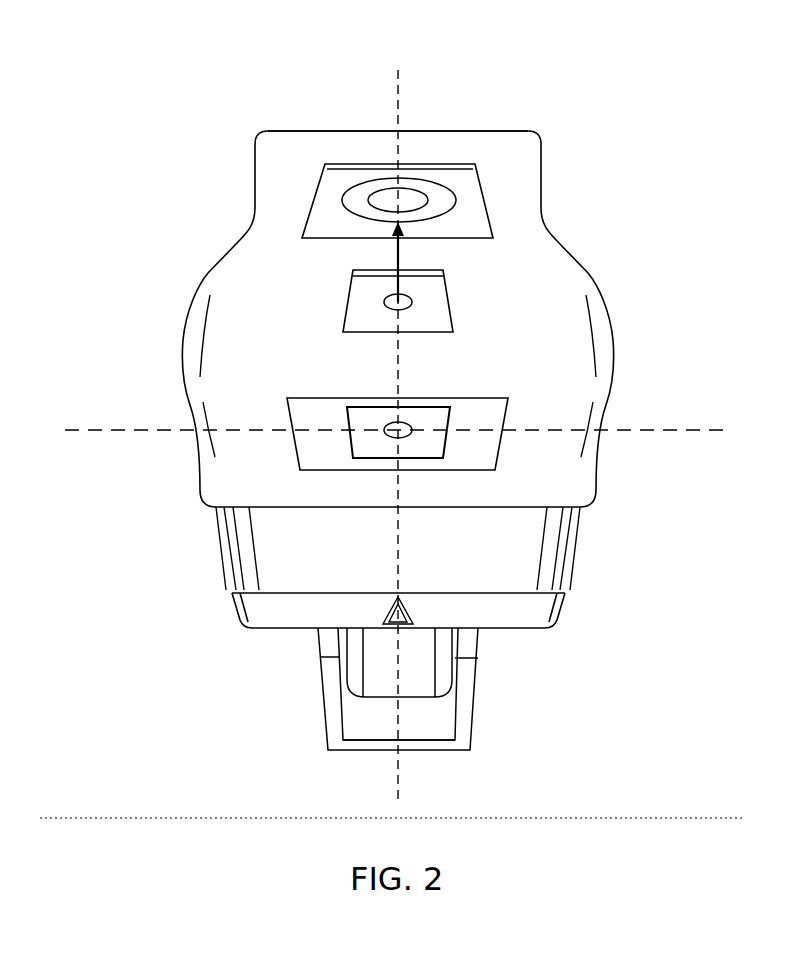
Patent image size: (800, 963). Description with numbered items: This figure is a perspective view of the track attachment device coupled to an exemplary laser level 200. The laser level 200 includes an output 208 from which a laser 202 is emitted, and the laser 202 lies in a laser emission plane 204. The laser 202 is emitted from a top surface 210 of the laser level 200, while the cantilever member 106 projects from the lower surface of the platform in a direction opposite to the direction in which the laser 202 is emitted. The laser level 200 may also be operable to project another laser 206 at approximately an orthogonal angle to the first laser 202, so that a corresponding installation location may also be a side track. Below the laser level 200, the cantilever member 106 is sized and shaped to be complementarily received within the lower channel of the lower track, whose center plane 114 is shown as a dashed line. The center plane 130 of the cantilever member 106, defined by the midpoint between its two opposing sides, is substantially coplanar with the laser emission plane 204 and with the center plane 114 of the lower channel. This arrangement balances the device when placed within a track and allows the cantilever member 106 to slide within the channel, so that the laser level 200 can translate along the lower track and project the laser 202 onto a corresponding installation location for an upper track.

The laser level 200 is at (557, 263).
The laser 202 is at (397, 284).
The laser emission plane 204 is at (398, 125).
The laser 206 is at (650, 430).
The output 208 is at (377, 286).
The top surface 210 is at (296, 303).
The center plane 130 is at (400, 655).
The cantilever member 106 is at (350, 655).
The center plane 114 is at (398, 720).